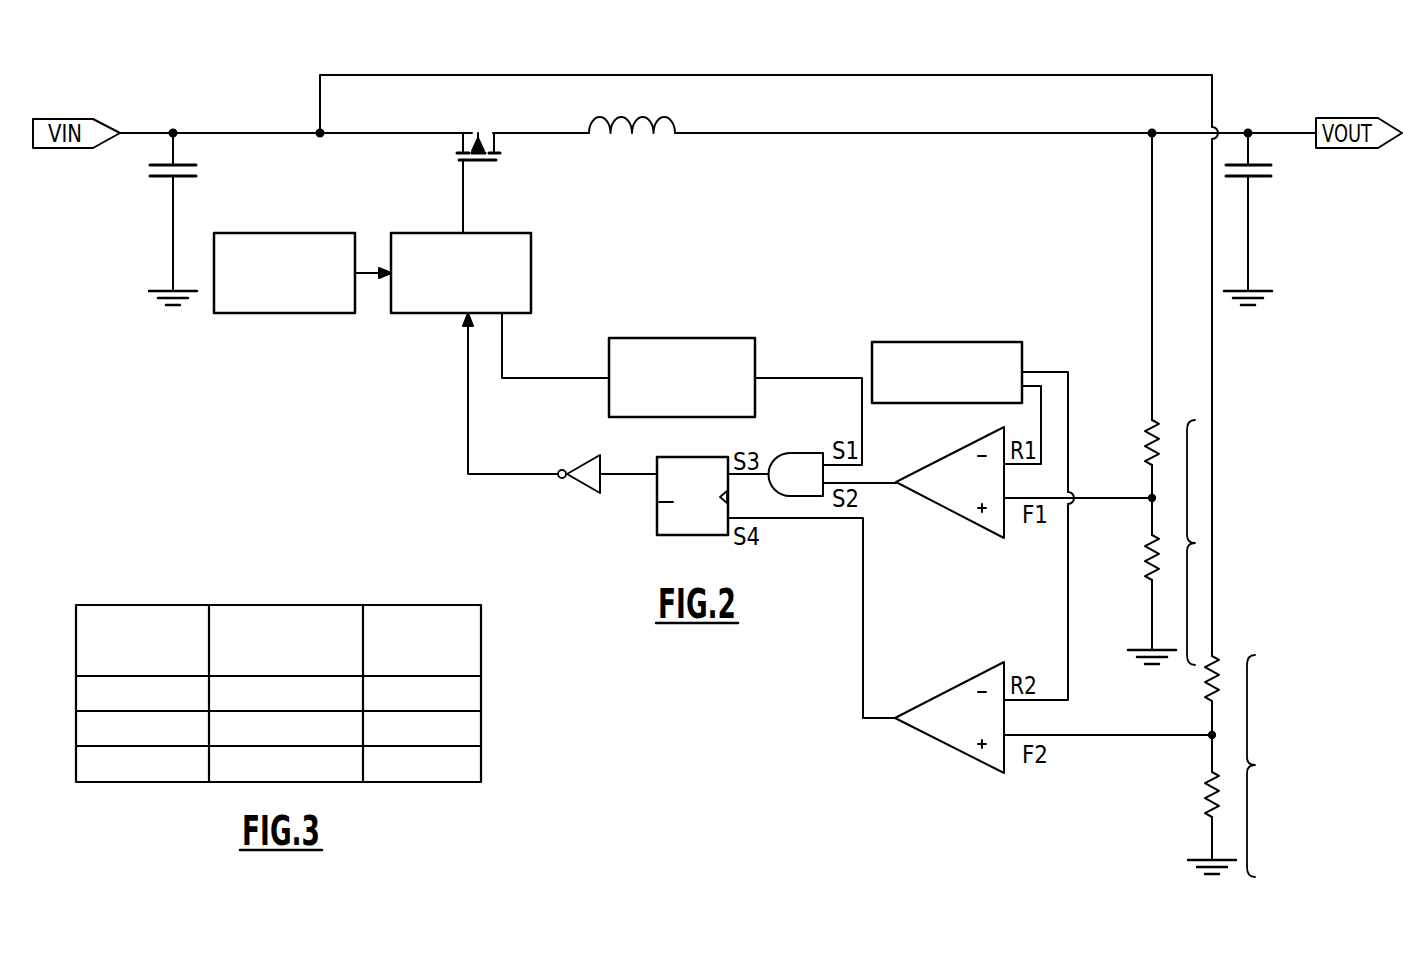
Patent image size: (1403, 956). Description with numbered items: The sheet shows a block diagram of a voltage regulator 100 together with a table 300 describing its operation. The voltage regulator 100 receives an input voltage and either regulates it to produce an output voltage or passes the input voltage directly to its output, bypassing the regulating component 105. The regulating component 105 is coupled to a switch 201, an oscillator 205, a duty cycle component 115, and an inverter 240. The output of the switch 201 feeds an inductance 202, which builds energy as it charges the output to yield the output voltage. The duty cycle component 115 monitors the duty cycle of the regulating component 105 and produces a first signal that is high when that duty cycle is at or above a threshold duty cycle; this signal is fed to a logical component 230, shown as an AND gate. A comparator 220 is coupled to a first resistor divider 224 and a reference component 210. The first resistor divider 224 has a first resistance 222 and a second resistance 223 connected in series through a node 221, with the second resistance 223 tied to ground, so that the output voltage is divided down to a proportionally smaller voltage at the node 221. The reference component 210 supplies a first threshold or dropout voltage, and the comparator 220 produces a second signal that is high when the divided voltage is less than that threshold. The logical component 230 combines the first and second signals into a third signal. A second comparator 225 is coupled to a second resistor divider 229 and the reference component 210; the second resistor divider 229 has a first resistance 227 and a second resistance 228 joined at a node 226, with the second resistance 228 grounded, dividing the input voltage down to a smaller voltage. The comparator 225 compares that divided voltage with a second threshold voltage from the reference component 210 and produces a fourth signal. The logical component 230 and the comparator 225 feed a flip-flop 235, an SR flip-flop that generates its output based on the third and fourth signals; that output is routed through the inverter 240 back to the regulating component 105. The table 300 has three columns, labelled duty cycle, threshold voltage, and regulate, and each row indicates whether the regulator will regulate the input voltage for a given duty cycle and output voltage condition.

In FIG. 2, the voltage regulator 100 is at (803, 58).
In FIG. 2, the regulating component 105 is at (430, 313).
In FIG. 2, the duty cycle component 115 is at (609, 356).
In FIG. 2, the switch 201 is at (471, 133).
In FIG. 2, the inductance 202 is at (676, 132).
In FIG. 2, the oscillator 205 is at (262, 313).
In FIG. 2, the reference component 210 is at (872, 360).
In FIG. 2, the comparator 220 is at (950, 511).
In FIG. 2, the node 221 is at (1150, 495).
In FIG. 2, the first resistance 222 is at (1146, 440).
In FIG. 2, the second resistance 223 is at (1146, 570).
In FIG. 2, the first resistor divider 224 is at (1195, 543).
In FIG. 2, the comparator 225 is at (950, 746).
In FIG. 2, the node 226 is at (1207, 740).
In FIG. 2, the first resistance 227 is at (1203, 680).
In FIG. 2, the second resistance 228 is at (1203, 805).
In FIG. 2, the second resistor divider 229 is at (1255, 765).
In FIG. 2, the logical component 230 is at (823, 452).
In FIG. 2, the flip-flop 235 is at (655, 515).
In FIG. 2, the inverter 240 is at (580, 454).
In FIG. 3, the table 300 is at (240, 582).